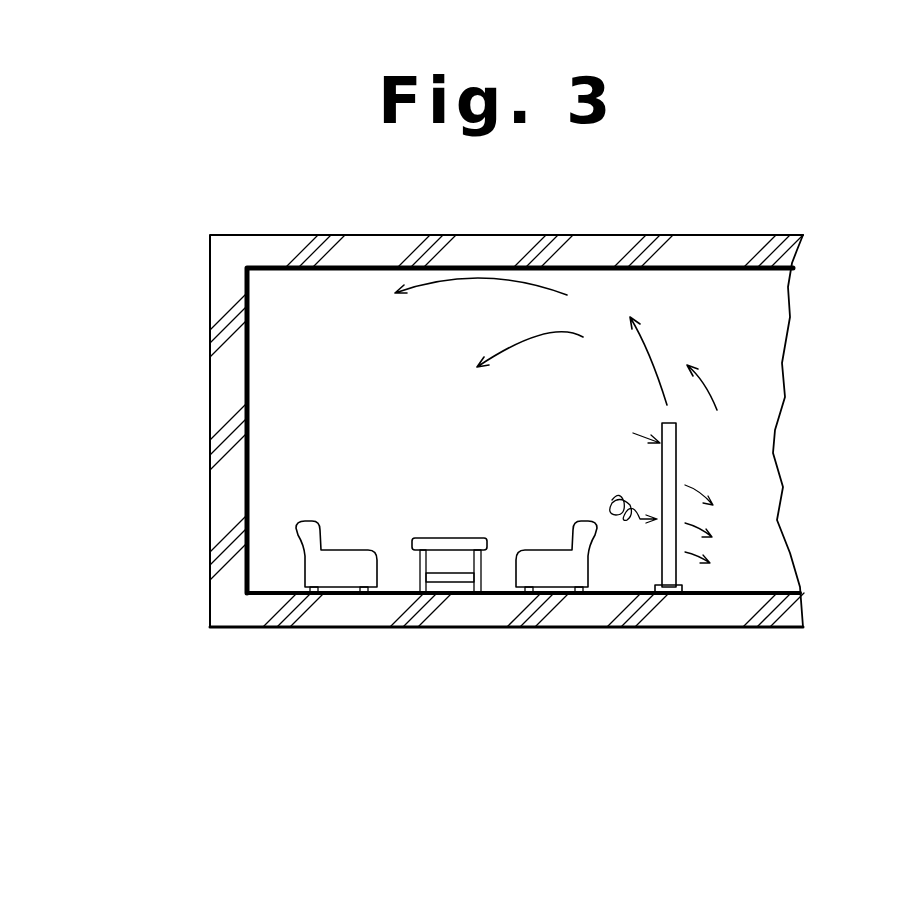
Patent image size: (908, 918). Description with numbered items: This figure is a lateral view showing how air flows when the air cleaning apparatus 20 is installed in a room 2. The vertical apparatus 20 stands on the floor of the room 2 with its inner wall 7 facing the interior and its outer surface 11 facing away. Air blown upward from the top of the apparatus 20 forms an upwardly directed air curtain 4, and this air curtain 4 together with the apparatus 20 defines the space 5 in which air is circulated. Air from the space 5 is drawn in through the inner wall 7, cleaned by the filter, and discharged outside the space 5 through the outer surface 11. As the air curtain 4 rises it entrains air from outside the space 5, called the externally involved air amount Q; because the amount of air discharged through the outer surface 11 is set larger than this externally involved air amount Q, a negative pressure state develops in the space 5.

The room 2 is at (206, 286).
The air curtain 4 is at (647, 340).
The space 5 is at (282, 465).
The inner wall 7 is at (662, 562).
The outer surface 11 is at (677, 577).
The apparatus 20 is at (678, 460).
The externally involved air amount Q is at (717, 402).